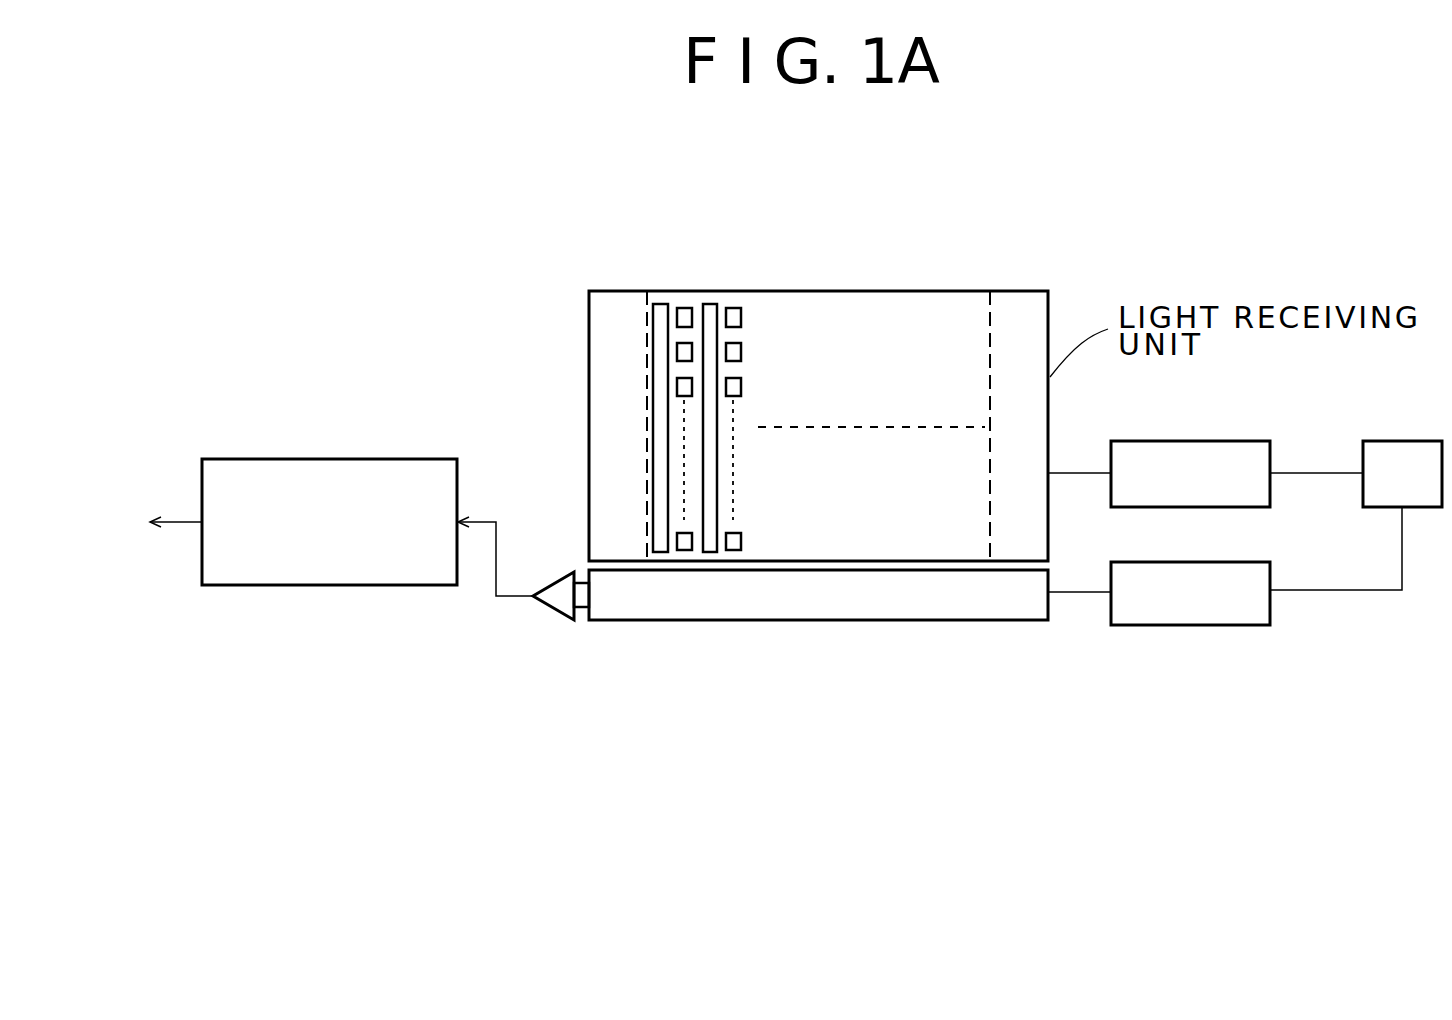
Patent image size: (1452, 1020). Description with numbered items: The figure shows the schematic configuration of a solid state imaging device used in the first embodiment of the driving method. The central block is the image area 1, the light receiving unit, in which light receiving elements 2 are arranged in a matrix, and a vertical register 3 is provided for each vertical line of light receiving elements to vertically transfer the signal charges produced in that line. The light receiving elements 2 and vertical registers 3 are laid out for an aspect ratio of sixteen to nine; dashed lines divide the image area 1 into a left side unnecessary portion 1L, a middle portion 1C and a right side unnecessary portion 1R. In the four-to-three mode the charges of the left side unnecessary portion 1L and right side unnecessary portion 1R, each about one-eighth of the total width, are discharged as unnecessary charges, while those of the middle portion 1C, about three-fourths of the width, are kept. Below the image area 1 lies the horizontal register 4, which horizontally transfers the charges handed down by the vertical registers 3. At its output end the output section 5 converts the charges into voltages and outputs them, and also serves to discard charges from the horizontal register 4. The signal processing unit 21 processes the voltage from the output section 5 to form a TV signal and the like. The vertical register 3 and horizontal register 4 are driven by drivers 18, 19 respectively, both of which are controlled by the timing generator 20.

The image area 1 is at (985, 288).
The left side unnecessary portion 1L is at (595, 337).
The right side unnecessary portion 1R is at (1040, 331).
The middle portion 1C is at (886, 373).
The light receiving element 2 is at (688, 349).
The vertical register 3 is at (660, 305).
The horizontal register 4 is at (987, 620).
The output section 5 is at (560, 575).
The driver 18 is at (1215, 441).
The driver 19 is at (1210, 625).
The timing generator 20 is at (1402, 441).
The signal processing unit 21 is at (367, 459).